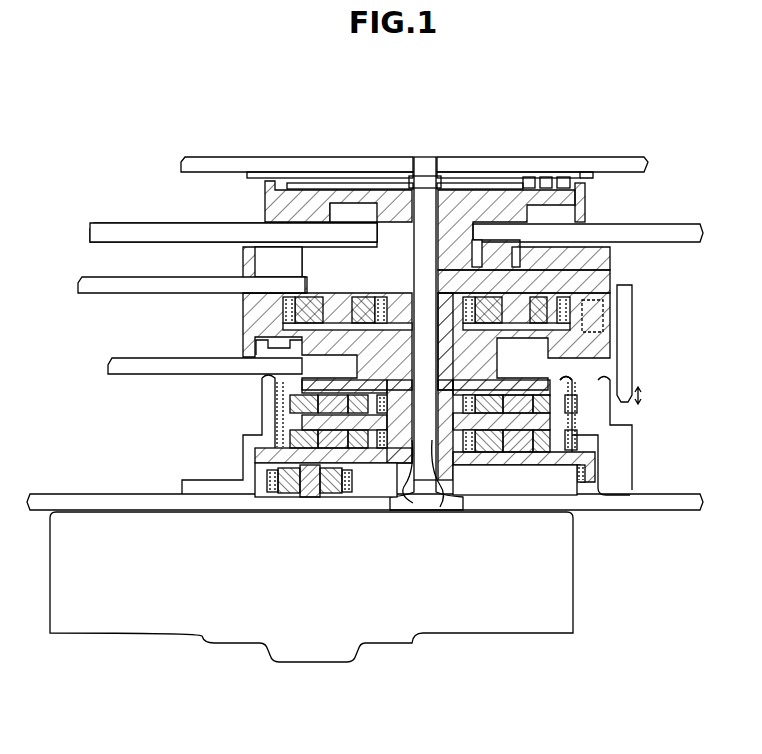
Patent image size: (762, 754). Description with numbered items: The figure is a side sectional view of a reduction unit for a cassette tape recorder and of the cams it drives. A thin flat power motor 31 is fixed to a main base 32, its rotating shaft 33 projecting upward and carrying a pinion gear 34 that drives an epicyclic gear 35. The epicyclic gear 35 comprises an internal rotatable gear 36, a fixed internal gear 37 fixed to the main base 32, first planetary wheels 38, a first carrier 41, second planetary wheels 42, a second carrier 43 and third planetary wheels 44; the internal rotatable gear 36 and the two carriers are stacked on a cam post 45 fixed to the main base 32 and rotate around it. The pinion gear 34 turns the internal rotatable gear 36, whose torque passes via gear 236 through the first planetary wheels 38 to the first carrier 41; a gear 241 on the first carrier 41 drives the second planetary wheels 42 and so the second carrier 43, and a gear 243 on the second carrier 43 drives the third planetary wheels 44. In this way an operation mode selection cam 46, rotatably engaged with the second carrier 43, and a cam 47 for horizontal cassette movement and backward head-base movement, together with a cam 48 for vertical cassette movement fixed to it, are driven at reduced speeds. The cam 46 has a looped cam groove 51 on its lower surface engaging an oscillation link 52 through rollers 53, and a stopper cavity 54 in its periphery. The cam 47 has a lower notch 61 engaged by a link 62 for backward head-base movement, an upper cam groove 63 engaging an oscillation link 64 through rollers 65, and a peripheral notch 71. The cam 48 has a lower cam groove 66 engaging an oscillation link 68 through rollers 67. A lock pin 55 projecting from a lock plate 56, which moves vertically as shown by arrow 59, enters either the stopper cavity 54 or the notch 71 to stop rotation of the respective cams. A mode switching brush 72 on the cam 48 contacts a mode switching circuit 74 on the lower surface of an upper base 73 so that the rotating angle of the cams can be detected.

The power motor 31 is at (527, 634).
The main base 32 is at (60, 493).
The rotating shaft 33 is at (320, 511).
The pinion gear 34 is at (287, 511).
The epicyclic gear 35 is at (235, 423).
The internal rotatable gear 36 is at (595, 475).
The fixed internal gear 37 is at (607, 445).
The first planetary wheels 38 is at (578, 437).
The first carrier 41 is at (578, 423).
The second planetary wheels 42 is at (577, 397).
The second carrier 43 is at (608, 350).
The third planetary wheels 44 is at (560, 280).
The cam post 45 is at (426, 166).
The operation mode selection cam 46 is at (590, 338).
The cam for horizontal movement of cassette and backward movement of head base 47 is at (608, 253).
The cam for vertical movement of cassette 48 is at (585, 194).
The cam groove 51 is at (247, 337).
The oscillation link 52 is at (125, 374).
The rollers 53 is at (257, 360).
The stopper cavity 54 is at (605, 312).
The lock pin 55 is at (605, 317).
The lock plate 56 is at (628, 362).
The arrow 59 is at (644, 400).
The notch 61 is at (248, 288).
The link for backward movement of head base 62 is at (122, 283).
The cam groove 63 is at (580, 173).
The oscillation link for horizontal movement of the cassette 64 is at (652, 224).
The rollers 65 is at (505, 175).
The cam groove 66 is at (376, 186).
The rollers 67 is at (325, 173).
The oscillation link for vertical movement of the cassette 68 is at (146, 222).
The notch 71 is at (592, 244).
The mode switching brush 72 is at (553, 178).
The upper base 73 is at (262, 160).
The mode switching circuit 74 is at (478, 173).
The gear 236 is at (413, 503).
The gear 241 is at (440, 507).
The gear 243 is at (507, 314).